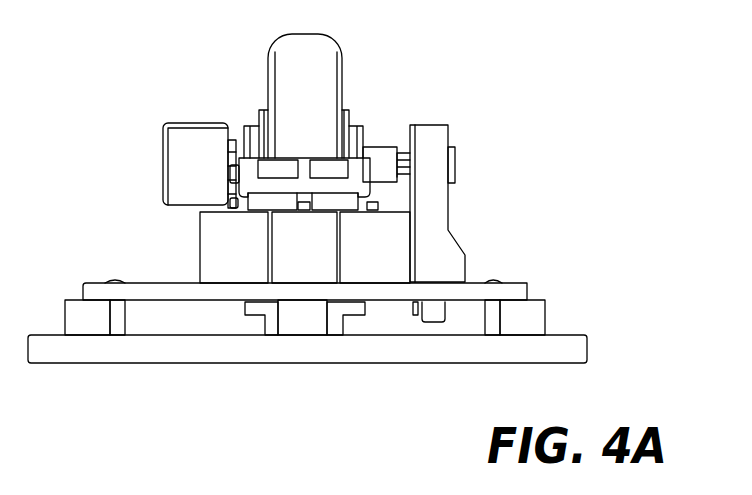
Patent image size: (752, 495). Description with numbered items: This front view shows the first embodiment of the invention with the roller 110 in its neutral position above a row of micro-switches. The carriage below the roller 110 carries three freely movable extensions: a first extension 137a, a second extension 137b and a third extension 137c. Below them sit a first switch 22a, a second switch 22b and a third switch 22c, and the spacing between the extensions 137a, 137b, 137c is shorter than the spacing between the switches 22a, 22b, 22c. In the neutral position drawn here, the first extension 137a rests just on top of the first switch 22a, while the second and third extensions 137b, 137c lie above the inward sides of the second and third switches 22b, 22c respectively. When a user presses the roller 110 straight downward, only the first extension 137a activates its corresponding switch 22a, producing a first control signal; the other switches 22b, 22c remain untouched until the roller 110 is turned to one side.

The roller 110 is at (343, 68).
The first extension 137a is at (302, 178).
The second extension 137b is at (363, 147).
The third extension 137c is at (250, 196).
The first switch 22a is at (308, 268).
The second switch 22b is at (383, 238).
The third switch 22c is at (232, 268).